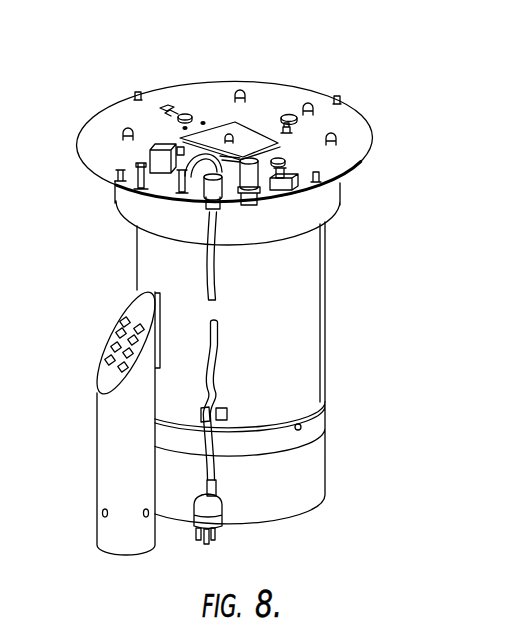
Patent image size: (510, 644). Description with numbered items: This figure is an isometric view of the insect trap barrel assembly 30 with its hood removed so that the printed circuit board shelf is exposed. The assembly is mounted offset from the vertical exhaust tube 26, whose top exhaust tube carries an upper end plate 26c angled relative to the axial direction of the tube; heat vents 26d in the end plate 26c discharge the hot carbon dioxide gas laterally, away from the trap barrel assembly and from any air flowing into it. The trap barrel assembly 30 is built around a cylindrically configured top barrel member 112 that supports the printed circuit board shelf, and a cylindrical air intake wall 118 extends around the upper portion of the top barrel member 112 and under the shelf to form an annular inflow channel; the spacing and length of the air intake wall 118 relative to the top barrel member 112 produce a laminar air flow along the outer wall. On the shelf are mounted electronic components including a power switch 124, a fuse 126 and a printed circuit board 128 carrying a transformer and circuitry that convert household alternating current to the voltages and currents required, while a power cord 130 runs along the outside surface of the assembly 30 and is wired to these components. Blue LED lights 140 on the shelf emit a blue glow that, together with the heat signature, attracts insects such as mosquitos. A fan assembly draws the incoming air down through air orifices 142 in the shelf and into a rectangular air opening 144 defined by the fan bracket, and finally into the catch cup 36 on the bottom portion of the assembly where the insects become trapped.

The exhaust tube 26 is at (122, 434).
The upper end plate 26c is at (140, 305).
The heat vents 26d is at (115, 347).
The insect trap barrel assembly 30 is at (334, 317).
The catch cup 36 is at (306, 470).
The top barrel member 112 is at (296, 290).
The air intake wall 118 is at (327, 226).
The power switch 124 is at (300, 176).
The fuse 126 is at (322, 218).
The printed circuit board 128 is at (118, 181).
The power cord 130 is at (205, 186).
The blue LED lights 140 is at (286, 130).
The air orifices 142 is at (188, 112).
The rectangular air opening 144 is at (228, 142).